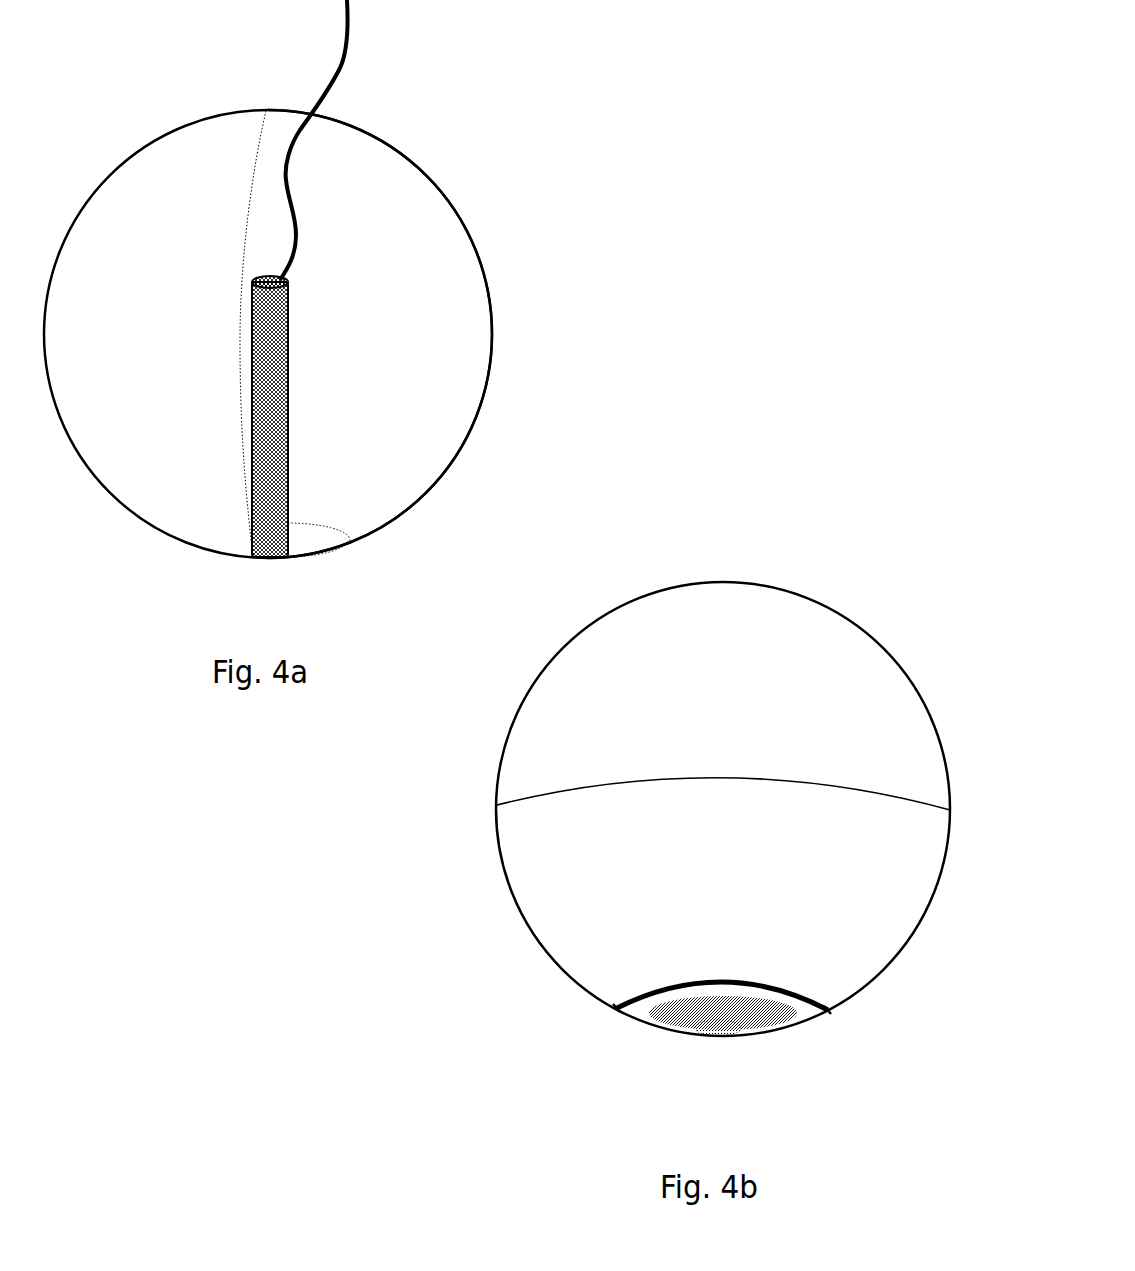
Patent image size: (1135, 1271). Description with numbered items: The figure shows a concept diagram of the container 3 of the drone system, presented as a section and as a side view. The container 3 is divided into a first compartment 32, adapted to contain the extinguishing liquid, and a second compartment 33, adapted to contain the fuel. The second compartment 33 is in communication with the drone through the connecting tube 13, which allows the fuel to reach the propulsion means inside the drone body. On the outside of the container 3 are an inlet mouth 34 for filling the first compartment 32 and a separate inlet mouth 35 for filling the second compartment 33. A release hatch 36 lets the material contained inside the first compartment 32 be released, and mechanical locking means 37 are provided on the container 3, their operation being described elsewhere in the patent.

In FIG. 4A, the container 3 is at (347, 279).
In FIG. 4B, the container 3 is at (727, 763).
In FIG. 4A, the connecting tube 13 is at (462, 205).
In FIG. 4A, the first compartment 32 is at (467, 297).
In FIG. 4A, the second compartment 33 is at (268, 423).
In FIG. 4B, the inlet mouth 34 is at (722, 1040).
In FIG. 4B, the inlet mouth 35 is at (700, 1027).
In FIG. 4B, the release hatch 36 is at (775, 1022).
In FIG. 4B, the mechanical locking means 37 is at (810, 996).